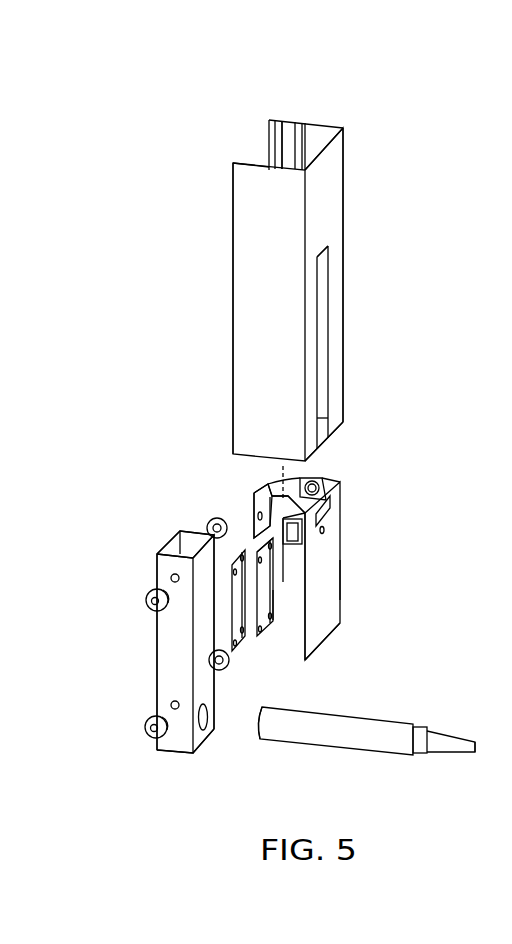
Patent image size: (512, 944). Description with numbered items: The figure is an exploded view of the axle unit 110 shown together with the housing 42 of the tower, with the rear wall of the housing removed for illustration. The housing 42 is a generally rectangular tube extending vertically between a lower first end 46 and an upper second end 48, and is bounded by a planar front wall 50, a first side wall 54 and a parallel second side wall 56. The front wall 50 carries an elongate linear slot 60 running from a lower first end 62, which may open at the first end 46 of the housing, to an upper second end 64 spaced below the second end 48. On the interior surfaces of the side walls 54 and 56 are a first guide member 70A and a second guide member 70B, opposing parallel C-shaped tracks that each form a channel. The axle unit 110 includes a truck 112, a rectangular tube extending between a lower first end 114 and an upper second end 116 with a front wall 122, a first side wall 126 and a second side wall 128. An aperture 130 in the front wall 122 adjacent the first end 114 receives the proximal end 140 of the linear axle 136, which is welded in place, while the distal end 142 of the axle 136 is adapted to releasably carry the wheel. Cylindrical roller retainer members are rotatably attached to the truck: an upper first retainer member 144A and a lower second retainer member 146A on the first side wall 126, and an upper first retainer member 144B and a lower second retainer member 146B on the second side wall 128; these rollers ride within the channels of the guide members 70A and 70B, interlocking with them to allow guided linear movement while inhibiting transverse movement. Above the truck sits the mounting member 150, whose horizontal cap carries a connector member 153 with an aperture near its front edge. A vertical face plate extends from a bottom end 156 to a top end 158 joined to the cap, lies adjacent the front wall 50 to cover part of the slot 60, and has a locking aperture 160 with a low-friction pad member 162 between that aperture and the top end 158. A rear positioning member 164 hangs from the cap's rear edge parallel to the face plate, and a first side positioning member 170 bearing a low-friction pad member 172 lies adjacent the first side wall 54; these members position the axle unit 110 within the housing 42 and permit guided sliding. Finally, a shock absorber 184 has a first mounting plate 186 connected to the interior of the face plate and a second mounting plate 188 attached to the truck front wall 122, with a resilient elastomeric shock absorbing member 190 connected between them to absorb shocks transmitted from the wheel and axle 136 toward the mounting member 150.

The housing 42 is at (349, 195).
The lower first end 46 is at (343, 427).
The upper second end 48 is at (346, 127).
The front wall 50 is at (332, 167).
The first side wall 54 is at (247, 296).
The second side wall 56 is at (317, 138).
The slot 60 is at (330, 345).
The lower first end of slot 62 is at (323, 441).
The upper second end of slot 64 is at (330, 256).
The first guide member 70A is at (248, 160).
The second guide member 70B is at (287, 133).
The axle unit 110 is at (402, 563).
The truck 112 is at (153, 659).
The lower first end of truck 114 is at (169, 758).
The upper second end of truck 116 is at (160, 548).
The front wall of truck 122 is at (205, 685).
The first side wall of truck 126 is at (160, 680).
The second side wall of truck 128 is at (193, 537).
The aperture 130 is at (205, 731).
The axle 136 is at (365, 720).
The proximal end of axle 140 is at (265, 740).
The distal end of axle 142 is at (472, 755).
The upper first retainer member 144A is at (146, 600).
The upper first retainer member 144B is at (227, 508).
The lower second retainer member 146A is at (145, 730).
The lower second retainer member 146B is at (228, 667).
The mounting member 150 is at (343, 548).
The connector member 153 is at (326, 478).
The bottom end of face plate 156 is at (329, 639).
The top end of face plate 158 is at (341, 492).
The locking aperture 160 is at (324, 528).
The low-friction pad member 162 is at (331, 505).
The rear positioning member 164 is at (254, 511).
The first side positioning member 170 is at (286, 549).
The low-friction pad member 172 is at (293, 536).
The shock absorber 184 is at (270, 635).
The first mounting plate 186 is at (272, 612).
The second mounting plate 188 is at (257, 624).
The shock absorbing member 190 is at (243, 602).